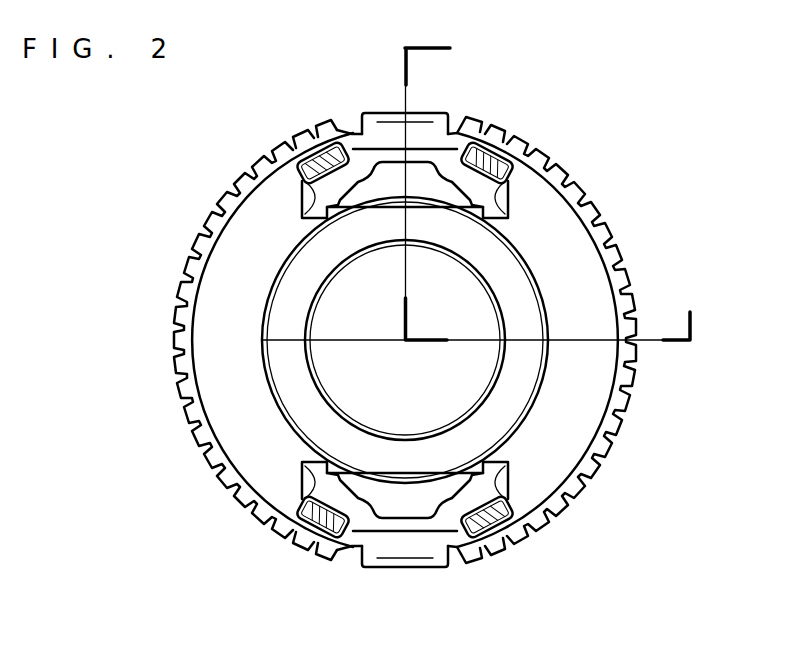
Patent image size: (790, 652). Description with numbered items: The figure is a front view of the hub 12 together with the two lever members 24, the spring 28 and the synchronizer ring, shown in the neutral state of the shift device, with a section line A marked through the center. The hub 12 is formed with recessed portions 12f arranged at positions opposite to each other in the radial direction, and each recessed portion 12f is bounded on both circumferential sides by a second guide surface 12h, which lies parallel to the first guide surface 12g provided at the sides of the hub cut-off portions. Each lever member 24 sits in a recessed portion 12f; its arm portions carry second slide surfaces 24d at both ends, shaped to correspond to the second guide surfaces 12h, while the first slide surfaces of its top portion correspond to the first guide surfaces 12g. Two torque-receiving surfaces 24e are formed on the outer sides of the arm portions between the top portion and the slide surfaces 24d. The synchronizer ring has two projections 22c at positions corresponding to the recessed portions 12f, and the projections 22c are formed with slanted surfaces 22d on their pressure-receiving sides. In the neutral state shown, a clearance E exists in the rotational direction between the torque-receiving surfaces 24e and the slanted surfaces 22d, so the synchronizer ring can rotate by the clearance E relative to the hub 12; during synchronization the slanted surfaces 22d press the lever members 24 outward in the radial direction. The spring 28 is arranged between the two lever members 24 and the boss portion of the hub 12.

The hub 12 is at (192, 251).
The recessed portion 12f is at (520, 230).
The first guide surface 12g is at (380, 116).
The second guide surface 12h is at (282, 162).
The projection 22c is at (304, 132).
The slanted surface 22d is at (326, 120).
The lever member 24 is at (412, 134).
The second slide surface 24d is at (300, 200).
The torque-receiving surface 24e is at (352, 142).
The spring 28 is at (264, 330).
The clearance E is at (322, 152).
The section line A- A is at (493, 180).